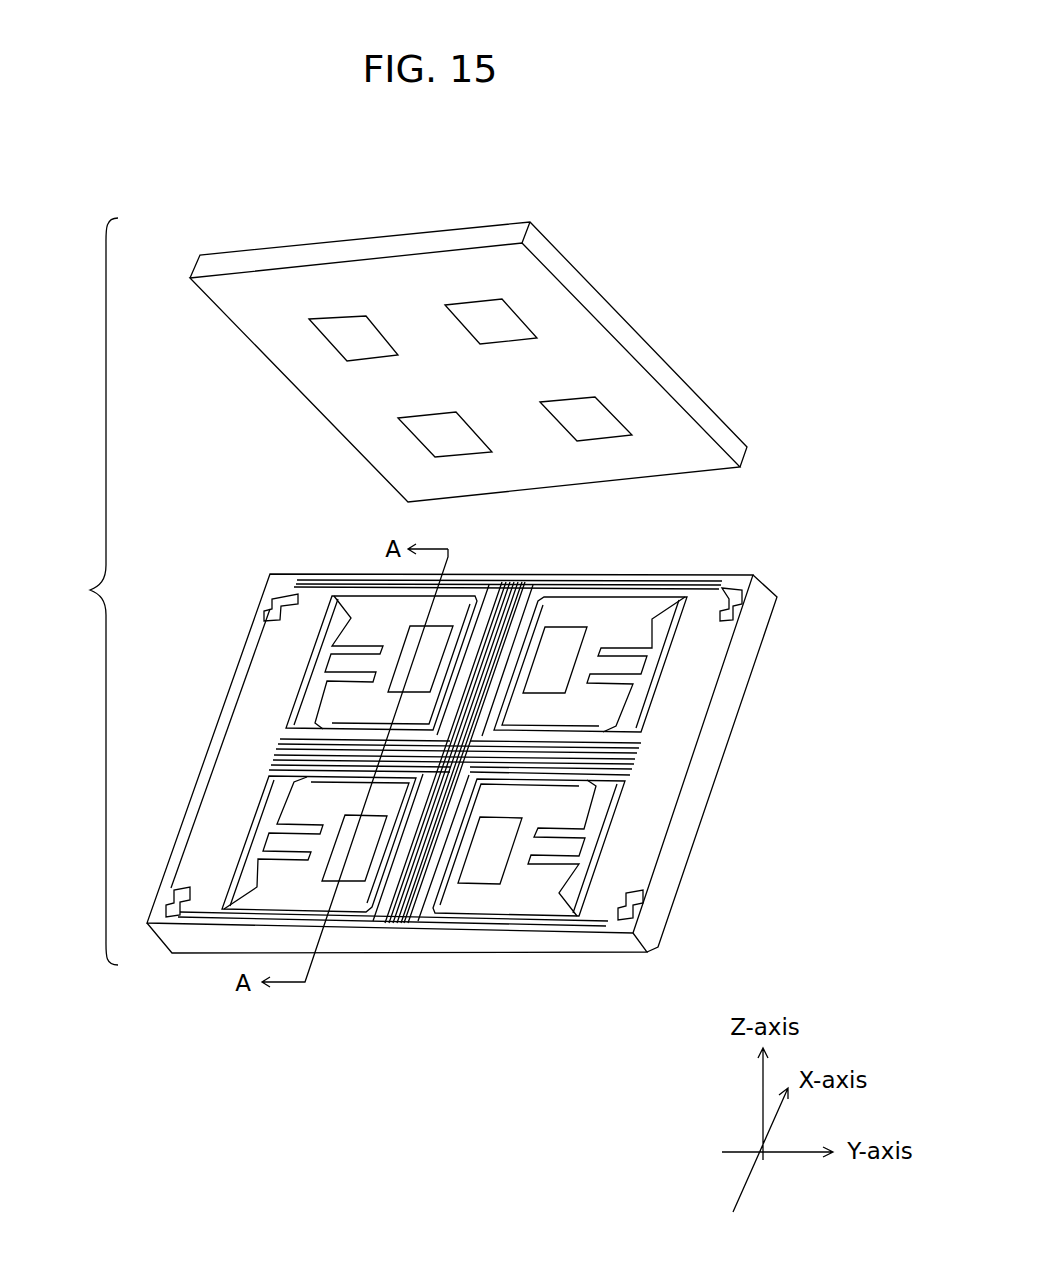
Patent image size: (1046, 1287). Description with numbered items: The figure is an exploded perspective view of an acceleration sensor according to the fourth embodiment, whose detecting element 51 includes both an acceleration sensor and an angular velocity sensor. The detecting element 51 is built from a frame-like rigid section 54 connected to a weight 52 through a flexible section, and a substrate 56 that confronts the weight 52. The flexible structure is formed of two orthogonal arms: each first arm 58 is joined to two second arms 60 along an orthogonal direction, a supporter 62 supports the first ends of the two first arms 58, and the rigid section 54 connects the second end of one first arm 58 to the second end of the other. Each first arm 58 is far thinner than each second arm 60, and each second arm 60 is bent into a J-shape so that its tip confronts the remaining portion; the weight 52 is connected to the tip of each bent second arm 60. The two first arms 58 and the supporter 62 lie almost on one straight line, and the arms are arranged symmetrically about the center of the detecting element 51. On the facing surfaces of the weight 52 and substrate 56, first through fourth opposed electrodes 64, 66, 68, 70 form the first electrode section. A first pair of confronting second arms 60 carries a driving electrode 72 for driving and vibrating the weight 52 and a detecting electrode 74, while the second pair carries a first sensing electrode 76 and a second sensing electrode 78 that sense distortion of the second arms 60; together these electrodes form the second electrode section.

The detecting element 51 is at (82, 591).
The weight 52 is at (625, 617).
The rigid section 54 is at (750, 647).
The substrate 56 is at (640, 350).
The first arm 58 is at (481, 614).
The second arm 60 is at (307, 767).
The supporter 62 is at (467, 757).
The first opposed electrode 64 is at (353, 335).
The second opposed electrode 66 is at (437, 430).
The third opposed electrode 68 is at (498, 320).
The fourth opposed electrode 70 is at (588, 423).
The driving electrode 72 is at (593, 785).
The detecting electrode 74 is at (552, 737).
The first sensing electrode 76 is at (400, 765).
The second sensing electrode 78 is at (355, 738).